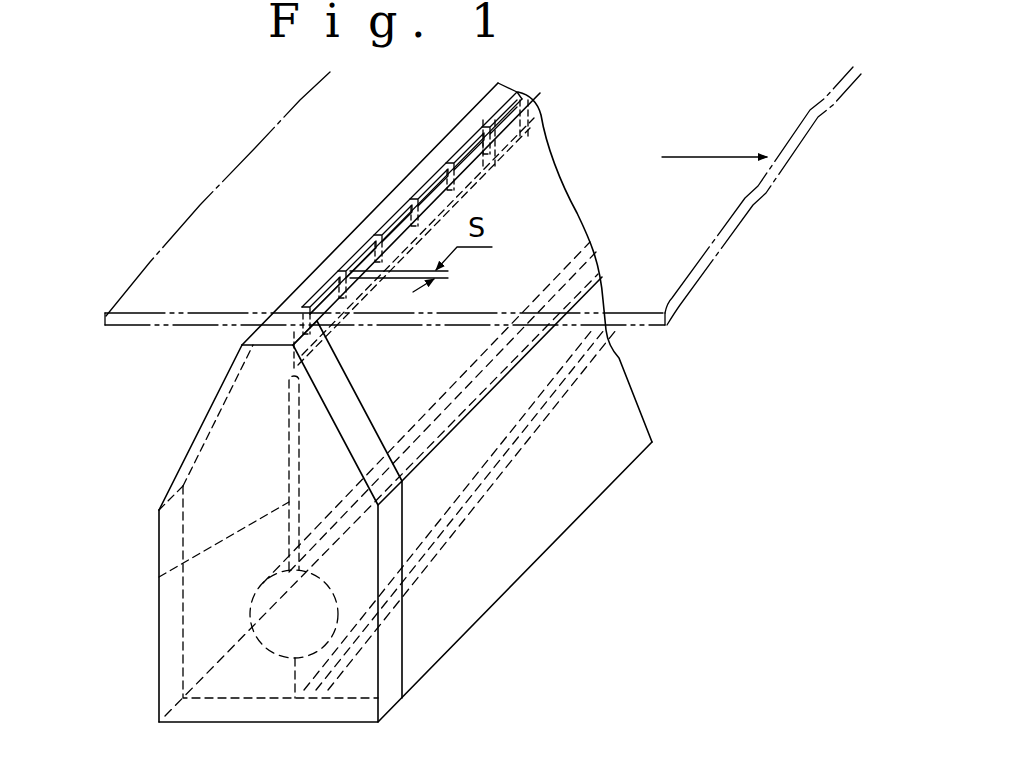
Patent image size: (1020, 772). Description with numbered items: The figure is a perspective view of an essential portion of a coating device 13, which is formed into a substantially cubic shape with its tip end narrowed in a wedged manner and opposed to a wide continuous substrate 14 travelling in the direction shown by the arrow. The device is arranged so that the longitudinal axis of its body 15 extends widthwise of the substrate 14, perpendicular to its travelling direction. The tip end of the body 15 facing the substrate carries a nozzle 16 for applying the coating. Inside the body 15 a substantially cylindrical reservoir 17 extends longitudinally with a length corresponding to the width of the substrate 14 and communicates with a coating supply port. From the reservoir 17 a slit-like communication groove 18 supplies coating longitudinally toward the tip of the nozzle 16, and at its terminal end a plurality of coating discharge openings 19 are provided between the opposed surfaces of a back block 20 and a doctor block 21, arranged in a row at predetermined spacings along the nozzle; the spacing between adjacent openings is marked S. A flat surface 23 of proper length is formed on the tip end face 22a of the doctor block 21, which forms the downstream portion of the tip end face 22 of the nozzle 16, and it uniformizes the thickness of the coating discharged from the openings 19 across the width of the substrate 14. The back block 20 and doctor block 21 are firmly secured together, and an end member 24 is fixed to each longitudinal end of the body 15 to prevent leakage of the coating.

The coating device 13 is at (135, 437).
The substrate 14 is at (714, 268).
The body 15 is at (523, 523).
The nozzle 16 is at (323, 262).
The reservoir 17 is at (285, 637).
The communication groove 18 is at (160, 573).
The coating discharge openings 19 is at (463, 133).
The back block 20 is at (228, 417).
The doctor block 21 is at (598, 452).
The tip end face of the nozzle 22 is at (345, 250).
The tip end face of the doctor block 22a is at (520, 98).
The flat surface 23 is at (508, 118).
The end member 24 is at (396, 623).